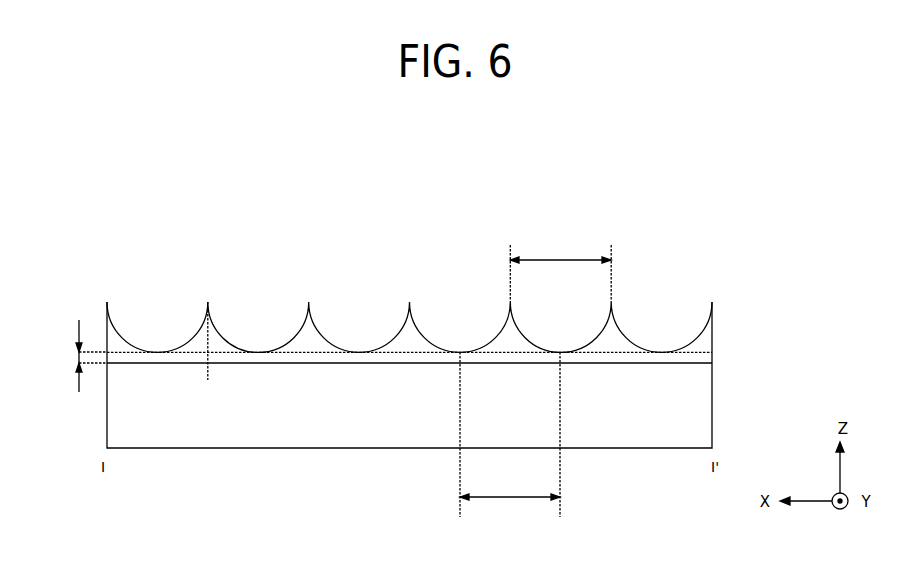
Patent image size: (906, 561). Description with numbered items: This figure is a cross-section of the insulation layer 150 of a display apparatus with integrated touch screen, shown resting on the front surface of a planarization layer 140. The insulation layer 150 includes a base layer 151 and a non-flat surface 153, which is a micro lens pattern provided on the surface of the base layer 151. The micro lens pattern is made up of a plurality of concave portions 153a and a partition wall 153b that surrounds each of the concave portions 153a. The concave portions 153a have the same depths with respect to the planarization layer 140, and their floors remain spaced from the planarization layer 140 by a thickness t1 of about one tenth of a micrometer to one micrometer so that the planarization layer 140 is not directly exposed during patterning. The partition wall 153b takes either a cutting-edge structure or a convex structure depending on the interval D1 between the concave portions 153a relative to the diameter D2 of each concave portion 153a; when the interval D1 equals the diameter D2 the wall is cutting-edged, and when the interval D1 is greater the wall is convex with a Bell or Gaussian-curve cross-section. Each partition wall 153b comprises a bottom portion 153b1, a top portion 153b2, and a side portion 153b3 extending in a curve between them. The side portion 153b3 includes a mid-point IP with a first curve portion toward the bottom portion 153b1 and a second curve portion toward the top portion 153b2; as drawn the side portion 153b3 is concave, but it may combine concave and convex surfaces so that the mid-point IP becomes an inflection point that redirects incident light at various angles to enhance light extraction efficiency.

The planarization layer 140 is at (692, 408).
The insulation layer 150 is at (794, 294).
The base layer 151 is at (692, 352).
The non-flat surface 153 is at (677, 318).
The concave portions 153a is at (358, 352).
The partition wall 153b is at (208, 380).
The bottom portion 153b1 is at (313, 352).
The top portion 153b2 is at (309, 310).
The side portion 153b3 is at (290, 336).
The mid-point IP is at (232, 322).
The interval D1 is at (510, 436).
The diameter D2 is at (560, 271).
The thickness t1 is at (79, 356).